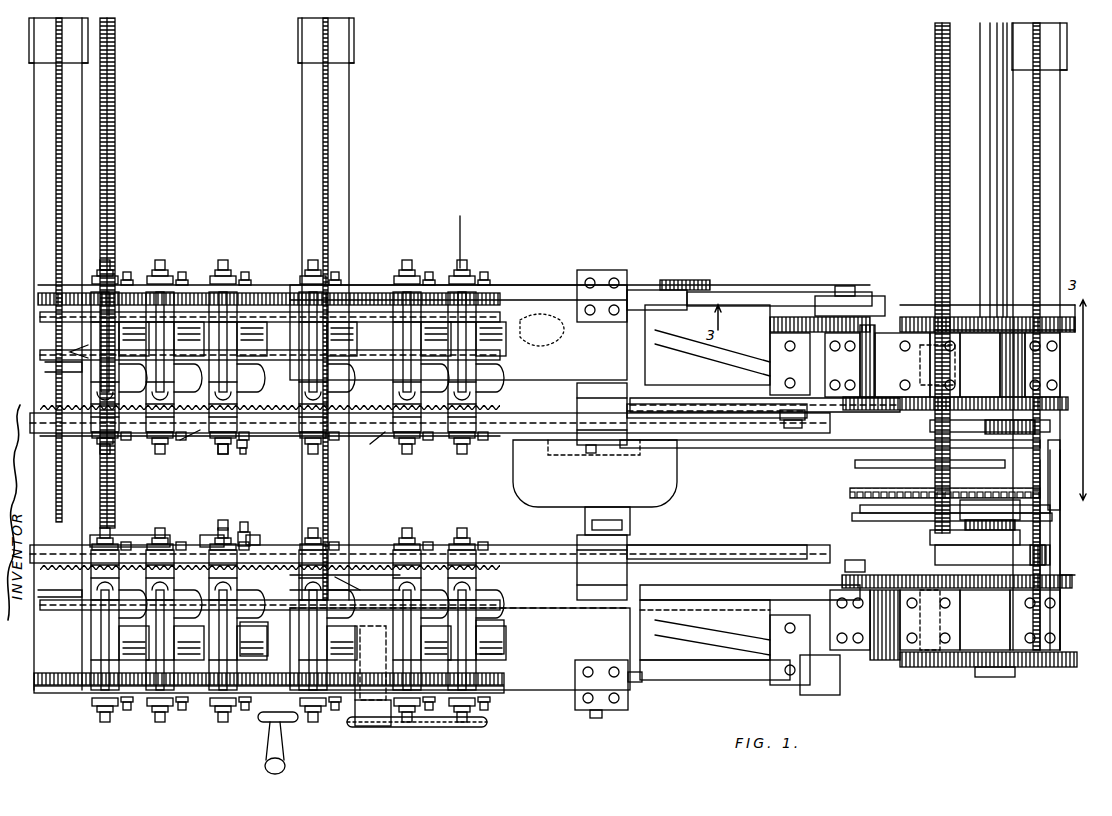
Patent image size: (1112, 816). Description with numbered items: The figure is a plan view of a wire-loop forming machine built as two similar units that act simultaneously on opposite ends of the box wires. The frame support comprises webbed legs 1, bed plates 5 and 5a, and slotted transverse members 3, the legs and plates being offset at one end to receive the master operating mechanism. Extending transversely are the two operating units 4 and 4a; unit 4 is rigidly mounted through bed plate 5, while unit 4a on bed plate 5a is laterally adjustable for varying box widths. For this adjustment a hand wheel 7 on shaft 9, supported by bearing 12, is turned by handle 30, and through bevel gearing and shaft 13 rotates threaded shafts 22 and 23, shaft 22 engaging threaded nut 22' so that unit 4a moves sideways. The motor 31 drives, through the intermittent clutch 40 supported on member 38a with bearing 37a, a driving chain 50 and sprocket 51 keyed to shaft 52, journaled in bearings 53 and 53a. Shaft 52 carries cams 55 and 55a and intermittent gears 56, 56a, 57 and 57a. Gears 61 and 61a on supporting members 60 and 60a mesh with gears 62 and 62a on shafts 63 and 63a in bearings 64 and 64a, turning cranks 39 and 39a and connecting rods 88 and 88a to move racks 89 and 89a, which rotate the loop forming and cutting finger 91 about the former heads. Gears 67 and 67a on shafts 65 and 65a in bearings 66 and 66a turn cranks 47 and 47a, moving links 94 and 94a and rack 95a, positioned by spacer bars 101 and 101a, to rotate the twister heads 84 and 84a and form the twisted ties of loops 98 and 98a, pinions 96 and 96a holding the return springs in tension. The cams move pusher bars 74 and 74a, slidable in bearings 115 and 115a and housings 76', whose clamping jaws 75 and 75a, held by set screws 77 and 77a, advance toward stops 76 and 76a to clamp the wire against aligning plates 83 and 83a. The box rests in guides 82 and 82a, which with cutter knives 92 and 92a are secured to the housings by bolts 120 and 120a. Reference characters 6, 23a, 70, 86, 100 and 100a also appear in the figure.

The webbed legs 1 is at (352, 42).
The slotted transverse members 3 is at (56, 112).
The operating unit 4 is at (1083, 378).
The operating unit 4a is at (458, 332).
The bed plate 5 is at (548, 640).
The bed plate 5a is at (540, 295).
The section line 6 is at (465, 210).
The hand wheel 7 is at (420, 728).
The shaft 9 is at (373, 726).
The bearing 12 is at (356, 700).
The shaft 13 is at (700, 580).
The threaded shaft 22 is at (127, 273).
The threaded nut 22' is at (66, 342).
The threaded shaft 23 is at (938, 104).
The rack bar 23a is at (930, 310).
The handle 30 is at (265, 762).
The motor 31 is at (540, 507).
The bearing 37a is at (930, 425).
The supporting member 38a is at (860, 470).
The crank 39 is at (790, 584).
The crank 39a is at (785, 410).
The intermittent clutch 40 is at (858, 512).
The crank 47 is at (838, 676).
The crank 47a is at (830, 300).
The driving chain 50 is at (850, 496).
The sprocket 51 is at (990, 500).
The shaft 52 is at (985, 150).
The bearing 53 is at (995, 668).
The bearing 53a is at (985, 332).
The cam 55 is at (1040, 548).
The cam 55a is at (985, 426).
The intermittent gear 56 is at (1072, 580).
The intermittent gear 56a is at (1058, 496).
The intermittent gear 57 is at (960, 668).
The intermittent gear 57a is at (945, 330).
The supporting member 60 is at (1050, 660).
The supporting member 60a is at (1050, 330).
The gear 61 is at (850, 660).
The gear 61a is at (905, 334).
The gear 62 is at (790, 690).
The gear 62a is at (790, 316).
The shaft 63 is at (762, 636).
The shaft 63a is at (760, 366).
The bearing 64 is at (760, 612).
The bearing 64a is at (790, 383).
The shaft 65 is at (880, 660).
The shaft 65a is at (870, 294).
The bearing 66 is at (905, 660).
The bearing 66a is at (868, 330).
The gear 67 is at (858, 562).
The gear 67a is at (816, 426).
The frame side 70 is at (1065, 658).
The pusher bar 74 is at (545, 548).
The pusher bar 74a is at (548, 432).
The clamping jaw 75 is at (250, 534).
The clamping jaw 75a is at (247, 444).
The stop 76 is at (449, 611).
The stop 76a is at (448, 445).
The housing 76' is at (105, 484).
The set screw 77 is at (246, 520).
The set screw 77a is at (246, 454).
The guide 82 is at (360, 548).
The guide 82a is at (283, 449).
The aligning plate 83 is at (268, 640).
The aligning plate 83a is at (358, 336).
The twister head 84 is at (500, 642).
The twister head 84a is at (255, 344).
The bar 86 is at (292, 590).
The connecting rod 88 is at (690, 545).
The connecting rod 88a is at (690, 420).
The rack 89 is at (500, 570).
The rack 89a is at (508, 412).
The loop forming and cutting finger 91 is at (345, 579).
The cutter knife 92 is at (204, 534).
The cutter knife 92a is at (290, 412).
The link 94 is at (700, 680).
The link 94a is at (690, 292).
The rack 95a is at (500, 300).
The pinion 96 is at (518, 686).
The pinion 96a is at (368, 310).
The loop 98 is at (158, 712).
The loop 98a is at (408, 262).
The bolt 100 is at (224, 518).
The bolt 100a is at (224, 456).
The spacer bar 101 is at (575, 690).
The spacer bar 101a is at (240, 290).
The bearing 115 is at (650, 480).
The bearing 115a is at (586, 440).
The bolt 120 is at (82, 598).
The bolt 120a is at (88, 368).